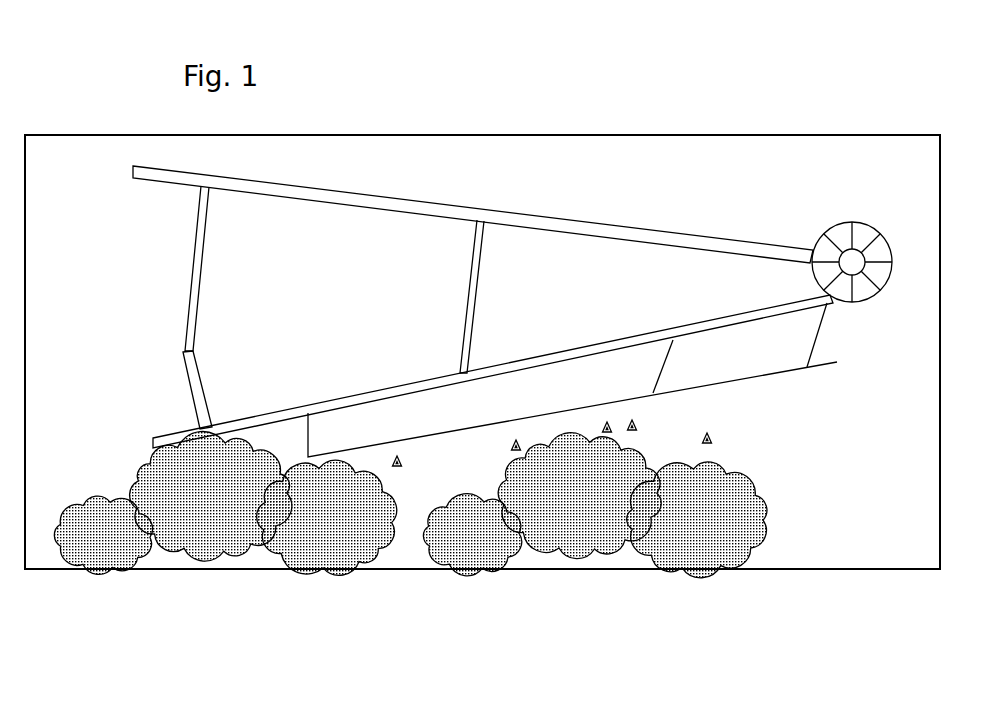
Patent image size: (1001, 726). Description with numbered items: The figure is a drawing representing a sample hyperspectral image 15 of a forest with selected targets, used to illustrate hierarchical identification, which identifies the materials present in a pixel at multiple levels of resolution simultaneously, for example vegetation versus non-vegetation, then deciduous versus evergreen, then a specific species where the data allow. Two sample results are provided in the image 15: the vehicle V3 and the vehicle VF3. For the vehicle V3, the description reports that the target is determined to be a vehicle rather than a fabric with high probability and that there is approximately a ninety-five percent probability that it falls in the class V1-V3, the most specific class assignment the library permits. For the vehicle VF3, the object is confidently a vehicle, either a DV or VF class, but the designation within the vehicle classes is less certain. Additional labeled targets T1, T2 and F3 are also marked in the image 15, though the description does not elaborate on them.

The image 15 is at (729, 94).
The vehicle VF3 is at (398, 490).
The vehicle V3 is at (513, 467).
The temperature sensor 2 T2 is at (605, 433).
The temperature sensor 1 T1 is at (642, 442).
The flame / fire zone F3 is at (708, 455).